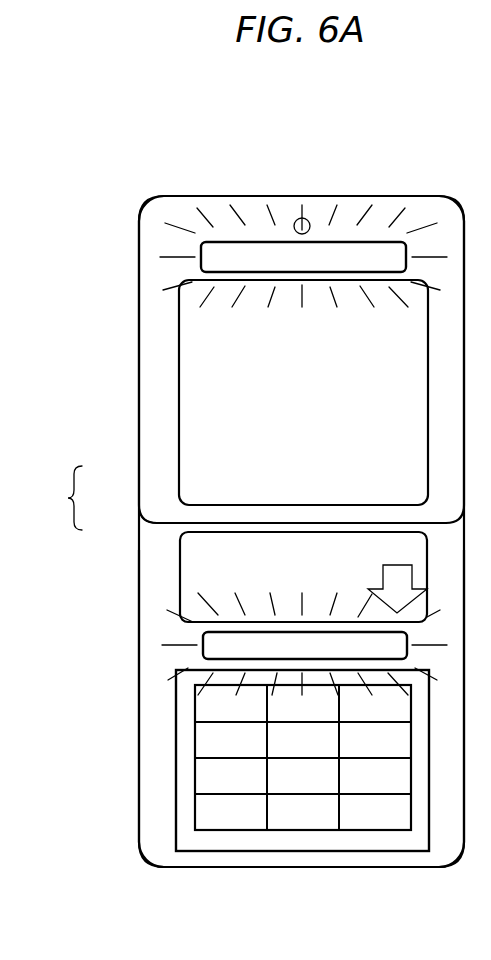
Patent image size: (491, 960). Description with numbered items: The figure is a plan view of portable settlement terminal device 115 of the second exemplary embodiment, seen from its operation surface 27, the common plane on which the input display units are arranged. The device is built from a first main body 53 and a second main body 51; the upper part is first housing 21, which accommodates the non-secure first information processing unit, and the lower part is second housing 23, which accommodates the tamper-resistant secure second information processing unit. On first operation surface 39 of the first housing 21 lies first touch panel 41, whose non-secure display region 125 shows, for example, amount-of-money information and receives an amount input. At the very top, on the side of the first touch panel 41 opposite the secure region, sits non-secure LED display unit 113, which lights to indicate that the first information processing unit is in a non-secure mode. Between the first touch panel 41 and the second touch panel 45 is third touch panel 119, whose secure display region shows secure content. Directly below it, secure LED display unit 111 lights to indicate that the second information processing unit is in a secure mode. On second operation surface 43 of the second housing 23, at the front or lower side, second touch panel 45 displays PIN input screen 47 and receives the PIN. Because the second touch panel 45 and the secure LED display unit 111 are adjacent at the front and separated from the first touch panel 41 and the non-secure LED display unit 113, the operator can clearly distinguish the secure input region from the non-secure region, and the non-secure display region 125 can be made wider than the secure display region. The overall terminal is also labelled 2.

The portable terminal 2 is at (315, 531).
The first housing 21 is at (140, 398).
The second housing 23 is at (140, 718).
The operation surface 27 is at (58, 498).
The first operation surface 39 is at (151, 498).
The second operation surface 43 is at (151, 535).
The first touch panel 41 is at (176, 356).
The second touch panel 45 is at (283, 855).
The PIN input screen 47 is at (331, 851).
The second main body 51 is at (138, 793).
The first main body 53 is at (138, 453).
The secure LED display unit 111 is at (205, 654).
The non-secure LED display unit 113 is at (258, 242).
The settlement terminal device 115 is at (192, 160).
The third touch panel 119 is at (176, 602).
The non-secure display region 125 is at (185, 398).